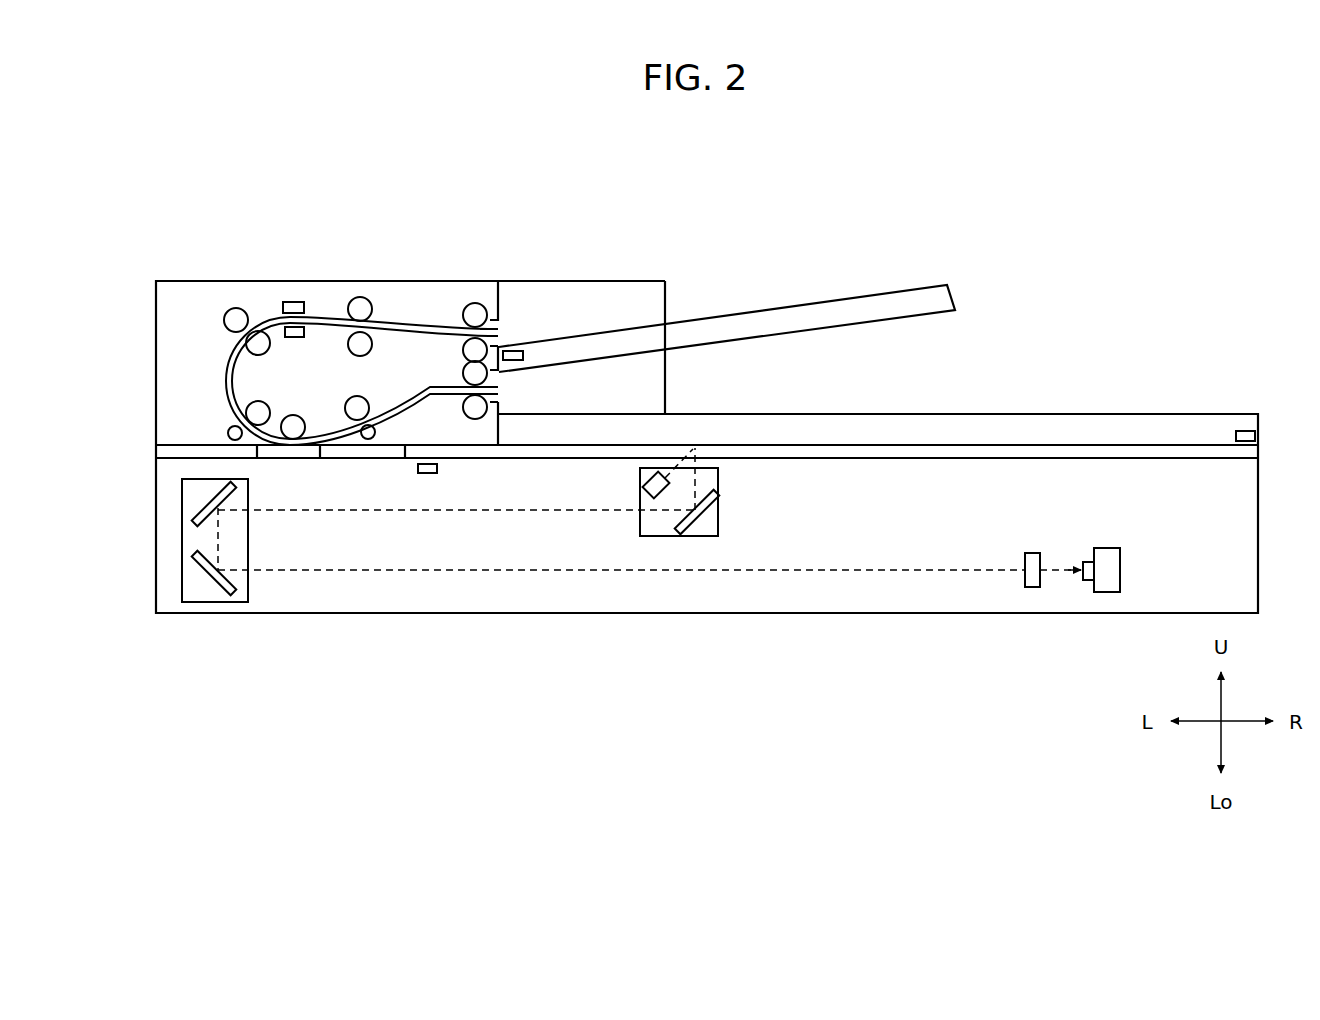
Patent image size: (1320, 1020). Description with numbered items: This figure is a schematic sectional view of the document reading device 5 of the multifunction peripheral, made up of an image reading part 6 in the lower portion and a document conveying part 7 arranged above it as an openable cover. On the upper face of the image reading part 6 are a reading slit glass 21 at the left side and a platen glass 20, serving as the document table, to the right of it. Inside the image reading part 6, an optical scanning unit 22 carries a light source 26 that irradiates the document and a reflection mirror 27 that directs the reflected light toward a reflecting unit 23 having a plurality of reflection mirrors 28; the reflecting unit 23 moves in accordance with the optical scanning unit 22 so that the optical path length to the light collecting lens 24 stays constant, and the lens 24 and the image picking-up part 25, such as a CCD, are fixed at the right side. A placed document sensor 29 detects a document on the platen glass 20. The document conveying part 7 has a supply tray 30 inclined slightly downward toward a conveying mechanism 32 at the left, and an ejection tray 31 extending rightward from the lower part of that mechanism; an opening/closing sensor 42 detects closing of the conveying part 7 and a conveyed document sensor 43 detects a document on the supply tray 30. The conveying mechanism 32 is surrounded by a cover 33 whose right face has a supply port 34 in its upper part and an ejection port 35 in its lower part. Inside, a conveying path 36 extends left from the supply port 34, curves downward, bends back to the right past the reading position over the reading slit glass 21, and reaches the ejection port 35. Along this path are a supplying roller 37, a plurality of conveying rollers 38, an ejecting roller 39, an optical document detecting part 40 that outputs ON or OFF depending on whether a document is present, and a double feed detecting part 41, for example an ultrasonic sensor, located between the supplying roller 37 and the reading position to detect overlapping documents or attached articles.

The image reading apparatus 5 is at (226, 224).
The image reading part 6 is at (138, 480).
The document conveying part 7 is at (138, 306).
The platen glass 20 is at (868, 443).
The reading slit glass 21 is at (257, 447).
The optical scanning unit 22 is at (718, 483).
The reflecting unit 23 is at (248, 545).
The light collecting lens 24 is at (1025, 560).
The image picking-up part 25 is at (1120, 553).
The light source 26 is at (640, 474).
The reflection mirror 27 is at (698, 530).
The reflection mirrors 28 is at (232, 500).
The placed document sensor 29 is at (426, 474).
The supply tray 30 is at (868, 293).
The ejection tray 31 is at (1087, 413).
The conveying mechanism 32 is at (646, 271).
The cover 33 is at (210, 280).
The supply port 34 is at (504, 333).
The ejection port 35 is at (504, 393).
The conveying path 36 is at (227, 353).
The supplying roller 37 is at (475, 303).
The conveying rollers 38 is at (362, 297).
The ejecting roller 39 is at (461, 374).
The document detecting part 40 is at (292, 302).
The double feed detecting part 41 is at (297, 337).
The opening/closing sensor 42 is at (1245, 431).
The conveyed document sensor 43 is at (523, 355).